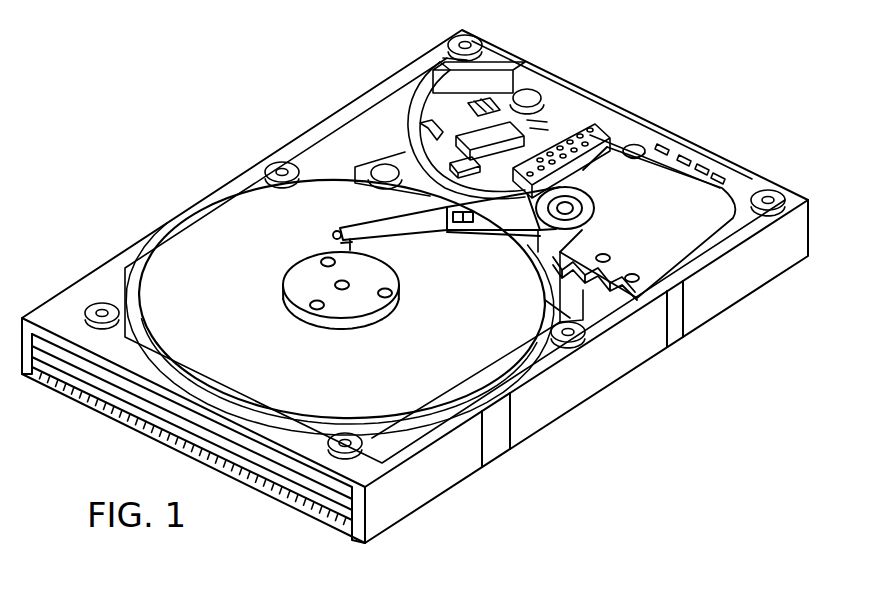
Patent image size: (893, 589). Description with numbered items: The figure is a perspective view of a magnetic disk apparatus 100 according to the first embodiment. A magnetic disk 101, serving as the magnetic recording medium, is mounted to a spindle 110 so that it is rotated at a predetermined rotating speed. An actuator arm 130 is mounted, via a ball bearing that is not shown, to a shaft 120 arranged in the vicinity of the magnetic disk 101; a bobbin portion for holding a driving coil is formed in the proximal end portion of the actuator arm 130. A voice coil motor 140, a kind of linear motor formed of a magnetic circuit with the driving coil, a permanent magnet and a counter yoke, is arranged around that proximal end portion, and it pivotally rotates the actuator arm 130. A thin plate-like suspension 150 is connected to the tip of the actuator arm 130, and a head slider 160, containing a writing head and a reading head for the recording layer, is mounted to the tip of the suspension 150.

The disk drive 100 is at (407, 66).
The magnetic disk 101 is at (173, 257).
The spindle 110 is at (368, 310).
The shaft 120 is at (606, 208).
The actuator arm 130 is at (490, 217).
The voice coil motor 140 is at (677, 134).
The suspension 150 is at (397, 230).
The head slider 160 is at (333, 237).